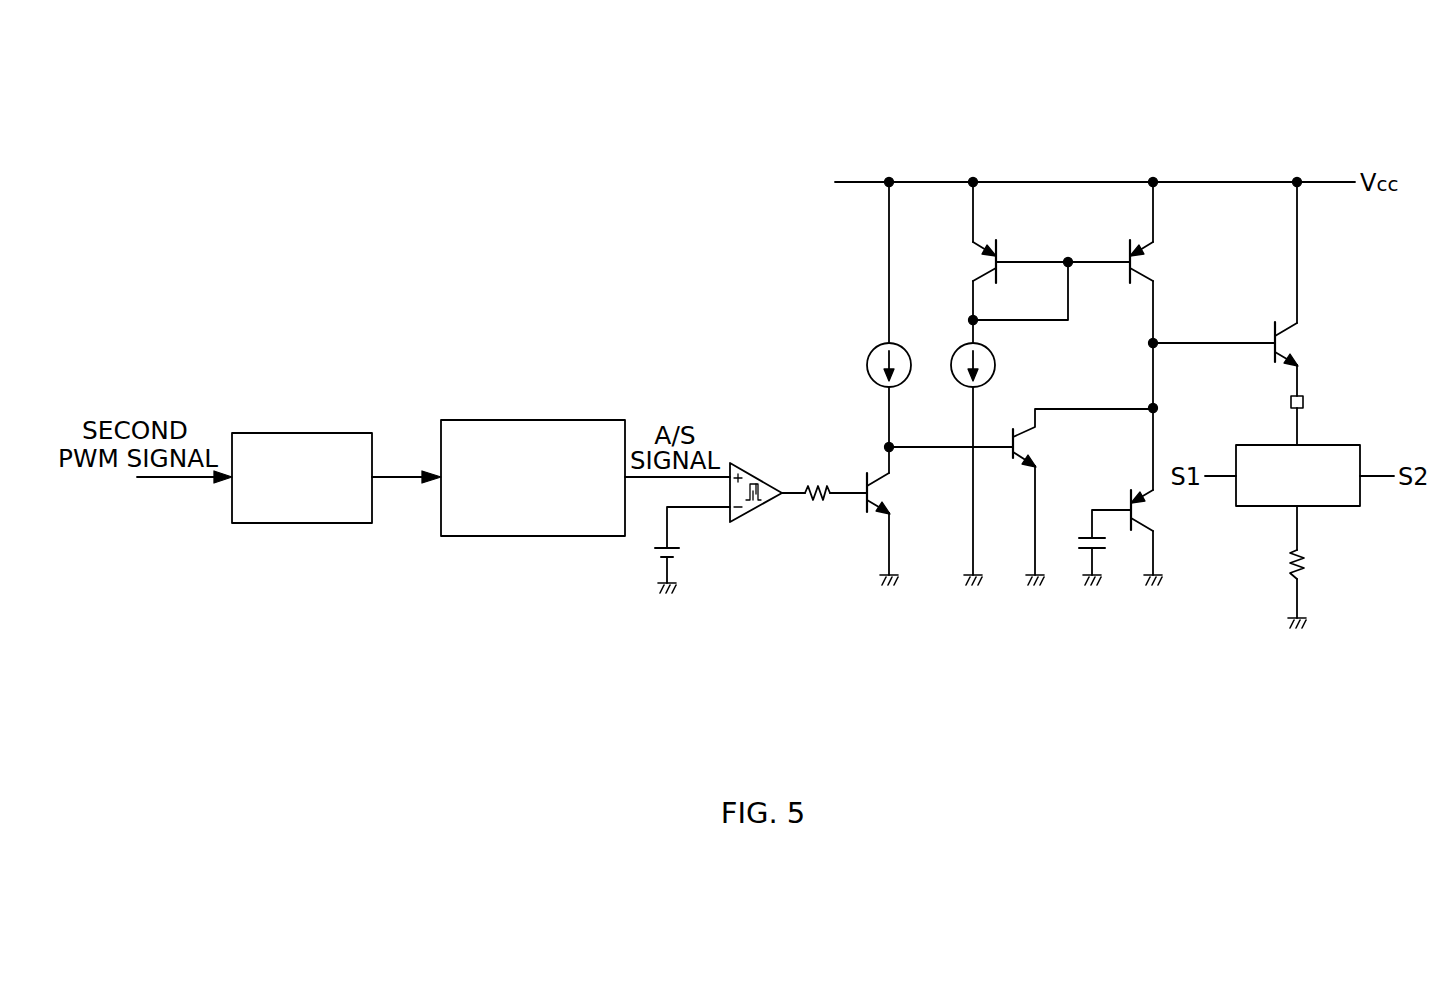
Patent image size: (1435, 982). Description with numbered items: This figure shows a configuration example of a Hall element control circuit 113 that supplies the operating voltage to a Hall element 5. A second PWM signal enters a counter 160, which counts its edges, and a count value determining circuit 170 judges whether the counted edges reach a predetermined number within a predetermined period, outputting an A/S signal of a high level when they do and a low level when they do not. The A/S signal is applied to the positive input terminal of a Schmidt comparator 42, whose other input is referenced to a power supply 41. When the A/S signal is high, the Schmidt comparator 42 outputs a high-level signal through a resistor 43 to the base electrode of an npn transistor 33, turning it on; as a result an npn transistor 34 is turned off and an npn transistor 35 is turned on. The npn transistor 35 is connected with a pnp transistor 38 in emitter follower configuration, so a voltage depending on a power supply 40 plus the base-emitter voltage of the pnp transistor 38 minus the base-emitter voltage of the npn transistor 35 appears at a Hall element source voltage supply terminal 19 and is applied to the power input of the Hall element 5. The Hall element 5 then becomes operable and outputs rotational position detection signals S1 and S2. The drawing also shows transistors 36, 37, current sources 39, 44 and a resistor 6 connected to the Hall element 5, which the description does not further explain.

The Hall element control circuit 113 is at (921, 125).
The counter 160 is at (346, 433).
The count value determining circuit 170 is at (548, 420).
The Schmidt comparator 42 is at (758, 470).
The power supply 41 is at (676, 552).
The resistor 43 is at (818, 503).
The npn transistor 33 is at (866, 480).
The npn transistor 34 is at (1020, 462).
The npn transistor 35 is at (1272, 336).
The transistor 36 is at (988, 246).
The transistor 37 is at (1137, 245).
The pnp transistor 38 is at (1134, 493).
The current source 39 is at (995, 365).
The current source 44 is at (866, 364).
The power supply 40 is at (1103, 546).
The Hall element source voltage supply terminal 19 is at (1304, 402).
The Hall element 5 is at (1362, 456).
The resistor 6 is at (1307, 562).